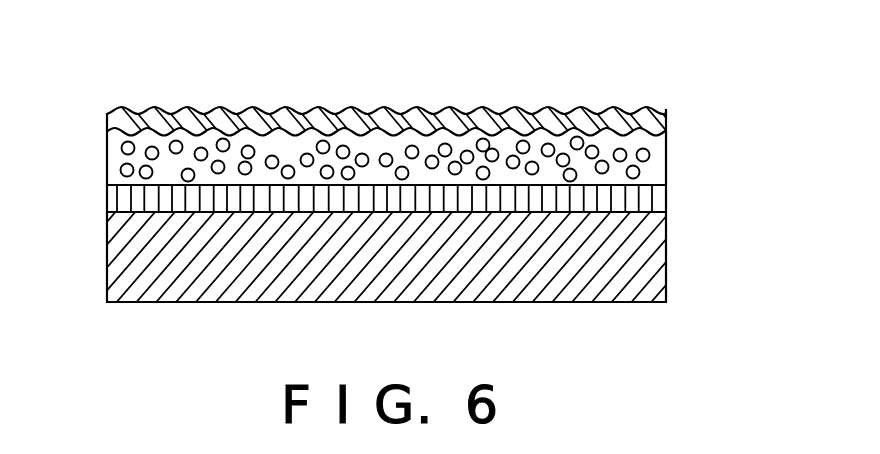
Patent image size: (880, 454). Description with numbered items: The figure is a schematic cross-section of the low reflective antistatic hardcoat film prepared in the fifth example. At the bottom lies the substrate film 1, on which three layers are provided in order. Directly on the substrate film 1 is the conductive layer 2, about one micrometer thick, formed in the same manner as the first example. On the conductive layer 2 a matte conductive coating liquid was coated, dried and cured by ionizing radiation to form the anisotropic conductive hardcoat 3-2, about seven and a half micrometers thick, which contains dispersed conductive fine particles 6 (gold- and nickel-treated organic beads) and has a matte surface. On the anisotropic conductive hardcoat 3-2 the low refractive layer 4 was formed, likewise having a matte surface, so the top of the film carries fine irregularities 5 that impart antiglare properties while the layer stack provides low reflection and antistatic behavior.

The substrate film 1 is at (667, 255).
The conductive layer 2 is at (667, 198).
The anisotropic conductive hardcoat 3-2 is at (657, 158).
The low refractive layer 4 is at (595, 117).
The fine irregularities 5 is at (667, 118).
The conductive fine particles 6 is at (121, 150).